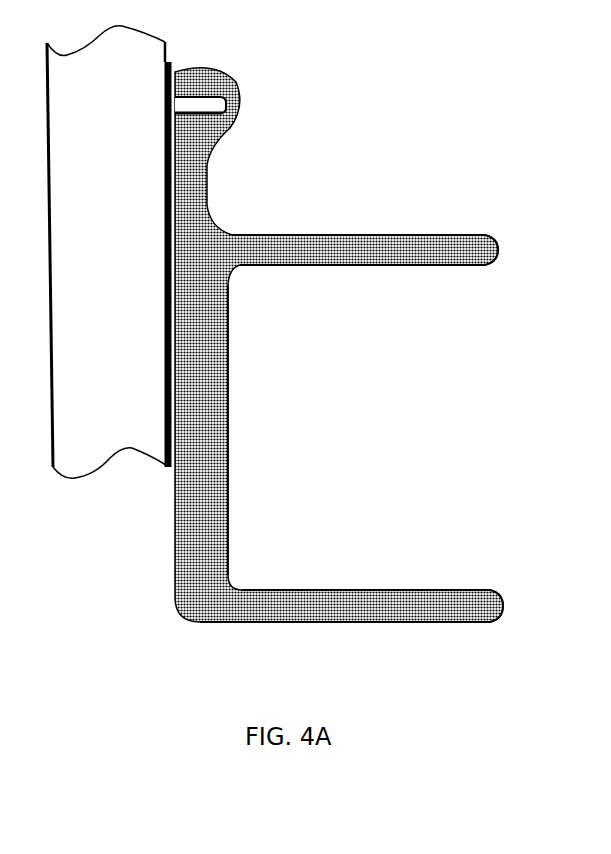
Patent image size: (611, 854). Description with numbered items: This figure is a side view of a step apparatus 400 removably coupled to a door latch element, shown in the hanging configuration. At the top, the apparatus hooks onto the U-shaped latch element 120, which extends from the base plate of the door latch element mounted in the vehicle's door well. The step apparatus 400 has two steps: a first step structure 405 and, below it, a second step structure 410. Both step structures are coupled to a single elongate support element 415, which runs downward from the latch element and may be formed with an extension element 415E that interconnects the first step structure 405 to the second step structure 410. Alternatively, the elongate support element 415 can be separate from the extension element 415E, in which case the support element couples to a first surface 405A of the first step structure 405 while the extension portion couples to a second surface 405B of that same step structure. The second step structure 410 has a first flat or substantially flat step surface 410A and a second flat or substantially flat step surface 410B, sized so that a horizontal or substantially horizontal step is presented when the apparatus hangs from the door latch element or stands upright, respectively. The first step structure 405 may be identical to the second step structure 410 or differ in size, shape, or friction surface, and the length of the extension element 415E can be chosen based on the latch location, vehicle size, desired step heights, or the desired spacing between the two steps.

The step apparatus 400 is at (408, 125).
The U-shaped latch element 120 is at (220, 115).
The elongate support element 415 is at (208, 183).
The extension element 415E is at (228, 430).
The first step structure 405 is at (500, 250).
The first surface 405A is at (380, 235).
The second surface 405B is at (410, 265).
The second step structure 410 is at (500, 598).
The first flat step surface 410A is at (342, 580).
The second flat step surface 410B is at (365, 625).